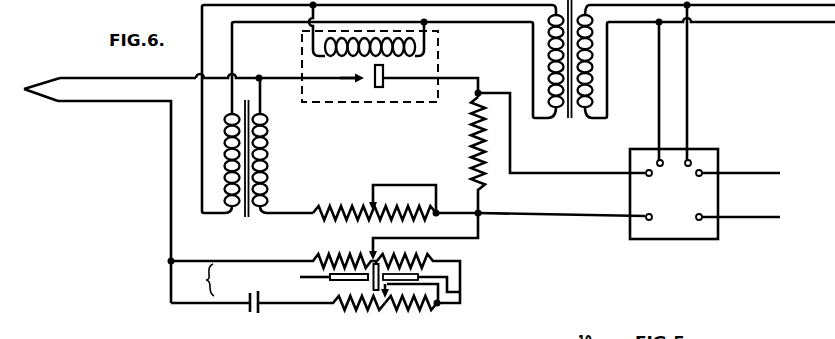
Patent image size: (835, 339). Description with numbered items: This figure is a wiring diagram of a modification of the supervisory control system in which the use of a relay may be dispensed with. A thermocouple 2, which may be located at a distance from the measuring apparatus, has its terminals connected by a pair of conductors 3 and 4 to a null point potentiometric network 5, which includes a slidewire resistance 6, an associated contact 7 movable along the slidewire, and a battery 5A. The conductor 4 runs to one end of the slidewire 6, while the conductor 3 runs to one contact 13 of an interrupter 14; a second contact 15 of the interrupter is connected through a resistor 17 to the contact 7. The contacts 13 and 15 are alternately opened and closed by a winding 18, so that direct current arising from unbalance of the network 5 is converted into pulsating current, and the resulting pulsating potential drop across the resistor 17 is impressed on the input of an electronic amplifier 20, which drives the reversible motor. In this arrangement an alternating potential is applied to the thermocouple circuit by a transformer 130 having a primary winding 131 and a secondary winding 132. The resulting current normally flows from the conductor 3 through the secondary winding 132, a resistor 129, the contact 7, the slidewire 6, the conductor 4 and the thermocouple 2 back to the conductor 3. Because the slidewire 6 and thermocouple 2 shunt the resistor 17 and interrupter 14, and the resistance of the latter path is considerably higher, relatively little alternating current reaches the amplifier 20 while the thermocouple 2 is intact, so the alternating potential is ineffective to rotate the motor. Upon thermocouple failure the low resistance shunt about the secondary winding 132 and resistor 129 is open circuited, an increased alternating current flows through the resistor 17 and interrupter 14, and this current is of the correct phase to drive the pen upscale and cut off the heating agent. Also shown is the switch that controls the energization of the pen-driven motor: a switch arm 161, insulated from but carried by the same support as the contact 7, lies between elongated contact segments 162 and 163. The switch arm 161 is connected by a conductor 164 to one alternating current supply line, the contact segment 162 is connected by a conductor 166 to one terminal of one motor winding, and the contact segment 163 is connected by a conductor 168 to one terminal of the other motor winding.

The thermocouple 2 is at (37, 96).
The conductor 3 is at (70, 77).
The conductor 4 is at (96, 101).
The null point potentiometric network 5 is at (205, 280).
The battery 5A is at (253, 315).
The slidewire resistance 6 is at (333, 257).
The contact 7 is at (369, 252).
The contact 13 is at (360, 84).
The interrupter 14 is at (300, 60).
The second contact 15 is at (380, 89).
The resistor 17 is at (474, 140).
The winding 18 is at (405, 56).
The electronic amplifier 20 is at (692, 228).
The resistor 129 is at (340, 210).
The transformer 130 is at (247, 217).
The primary winding 131 is at (226, 128).
The secondary winding 132 is at (270, 152).
The switch arm 161 is at (378, 260).
The contact segment 162 is at (403, 281).
The contact segment 163 is at (334, 281).
The conductor 164 is at (371, 306).
The conductor 166 is at (447, 290).
The conductor 168 is at (318, 283).